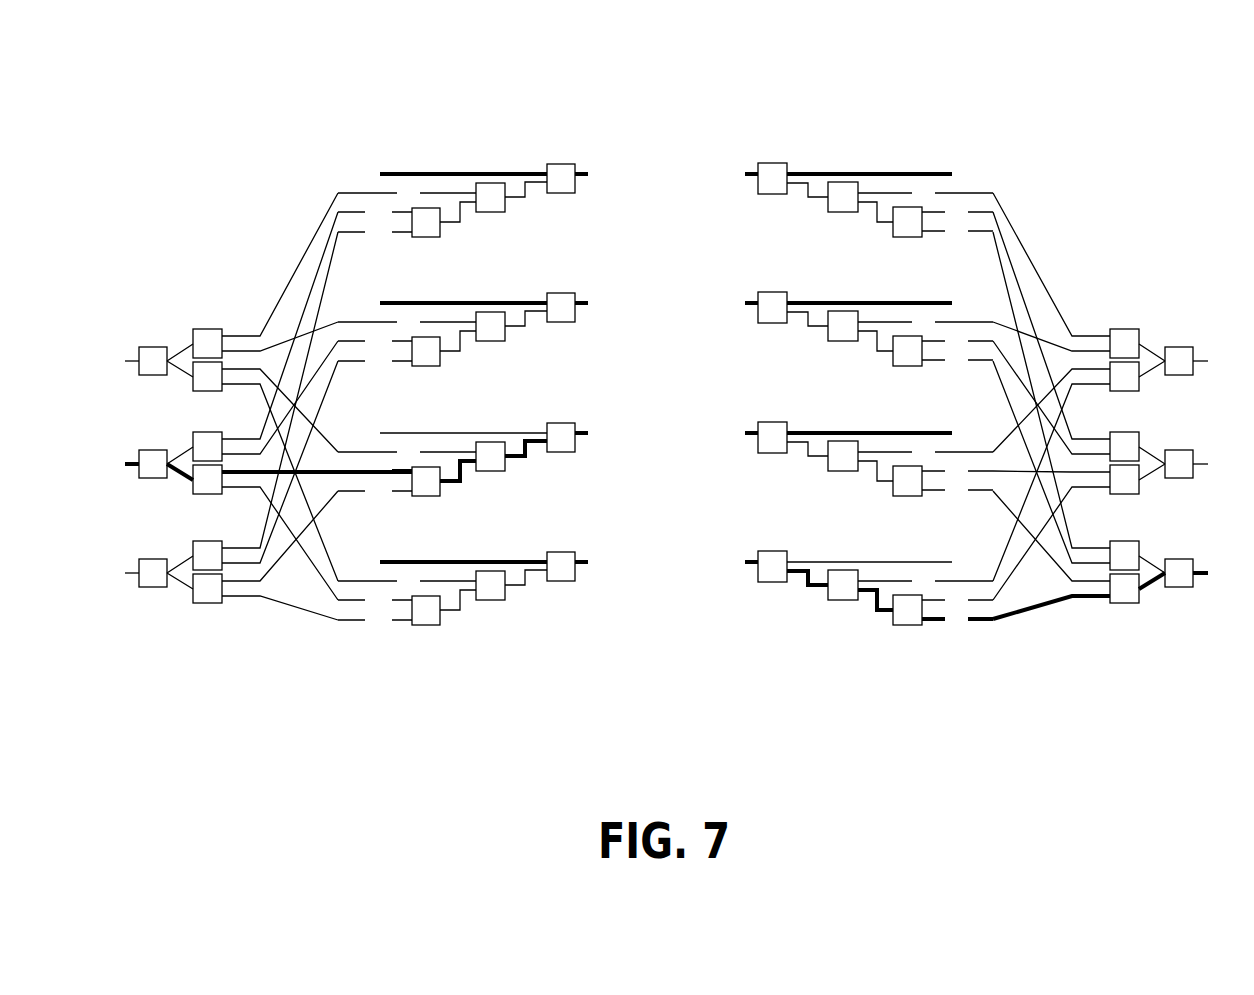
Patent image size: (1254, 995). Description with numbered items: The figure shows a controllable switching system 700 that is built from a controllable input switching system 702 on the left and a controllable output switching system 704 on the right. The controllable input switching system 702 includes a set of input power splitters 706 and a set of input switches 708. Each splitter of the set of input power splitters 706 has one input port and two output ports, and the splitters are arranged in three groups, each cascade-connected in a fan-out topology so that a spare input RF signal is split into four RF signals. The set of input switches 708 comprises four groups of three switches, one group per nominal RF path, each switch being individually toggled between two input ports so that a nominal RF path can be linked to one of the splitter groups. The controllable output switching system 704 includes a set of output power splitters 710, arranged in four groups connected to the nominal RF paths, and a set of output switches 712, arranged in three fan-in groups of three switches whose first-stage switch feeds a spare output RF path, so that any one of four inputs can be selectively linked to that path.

The controllable switching system 700 is at (148, 91).
The controllable input switching system 702 is at (298, 132).
The controllable output switching system 704 is at (1022, 132).
The set of input power splitters 706 is at (173, 315).
The set of input switches 708 is at (471, 636).
The set of output power splitters 710 is at (847, 637).
The set of output switches 712 is at (1149, 299).